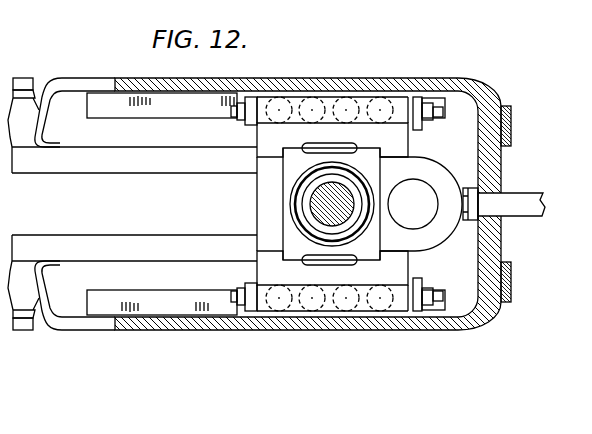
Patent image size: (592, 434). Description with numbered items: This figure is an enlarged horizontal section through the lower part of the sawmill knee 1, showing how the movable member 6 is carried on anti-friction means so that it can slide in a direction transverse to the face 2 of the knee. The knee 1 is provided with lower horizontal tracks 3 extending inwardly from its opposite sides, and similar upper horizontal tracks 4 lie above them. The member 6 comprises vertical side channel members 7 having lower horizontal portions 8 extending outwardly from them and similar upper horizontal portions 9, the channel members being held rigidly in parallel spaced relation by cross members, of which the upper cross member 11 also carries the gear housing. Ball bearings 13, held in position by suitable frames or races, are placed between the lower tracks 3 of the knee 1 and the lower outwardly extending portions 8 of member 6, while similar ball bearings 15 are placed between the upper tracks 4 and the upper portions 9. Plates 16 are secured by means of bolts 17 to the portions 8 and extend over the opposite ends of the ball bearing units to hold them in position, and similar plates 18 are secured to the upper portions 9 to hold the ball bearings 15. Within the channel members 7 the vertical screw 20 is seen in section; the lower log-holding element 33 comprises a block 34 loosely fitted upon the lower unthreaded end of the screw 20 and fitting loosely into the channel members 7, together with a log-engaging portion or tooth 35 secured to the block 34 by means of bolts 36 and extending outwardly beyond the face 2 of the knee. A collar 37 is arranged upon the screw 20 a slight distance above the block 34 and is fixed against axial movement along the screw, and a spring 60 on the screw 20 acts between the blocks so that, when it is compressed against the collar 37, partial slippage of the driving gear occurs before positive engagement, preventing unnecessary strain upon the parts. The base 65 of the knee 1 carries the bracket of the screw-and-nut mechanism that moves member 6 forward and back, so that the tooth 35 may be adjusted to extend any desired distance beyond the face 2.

The knee 1 is at (474, 91).
The face 2 is at (512, 127).
The lower horizontal tracks 3 is at (185, 113).
The member 6 is at (268, 146).
The vertical side channel members 7 is at (397, 149).
The lower horizontal portions 8 is at (400, 99).
The upper cross member 11 is at (340, 61).
The ball bearings 13 is at (278, 97).
The plates 16 is at (250, 124).
The bolts 17 is at (231, 111).
The vertical screw 20 is at (348, 197).
The lower log-holding element 33 is at (464, 221).
The block 34 is at (288, 236).
The log-engaging portion or tooth 35 is at (533, 193).
The bolts 36 is at (468, 187).
The collar 37 is at (300, 176).
The spring 60 is at (369, 217).
The base 65 is at (34, 74).
The upper horizontal tracks 4 is at (93, 6).
The upper horizontal portions 9 is at (364, 6).
The ball bearings 15 is at (307, 6).
The plates 18 is at (323, 6).